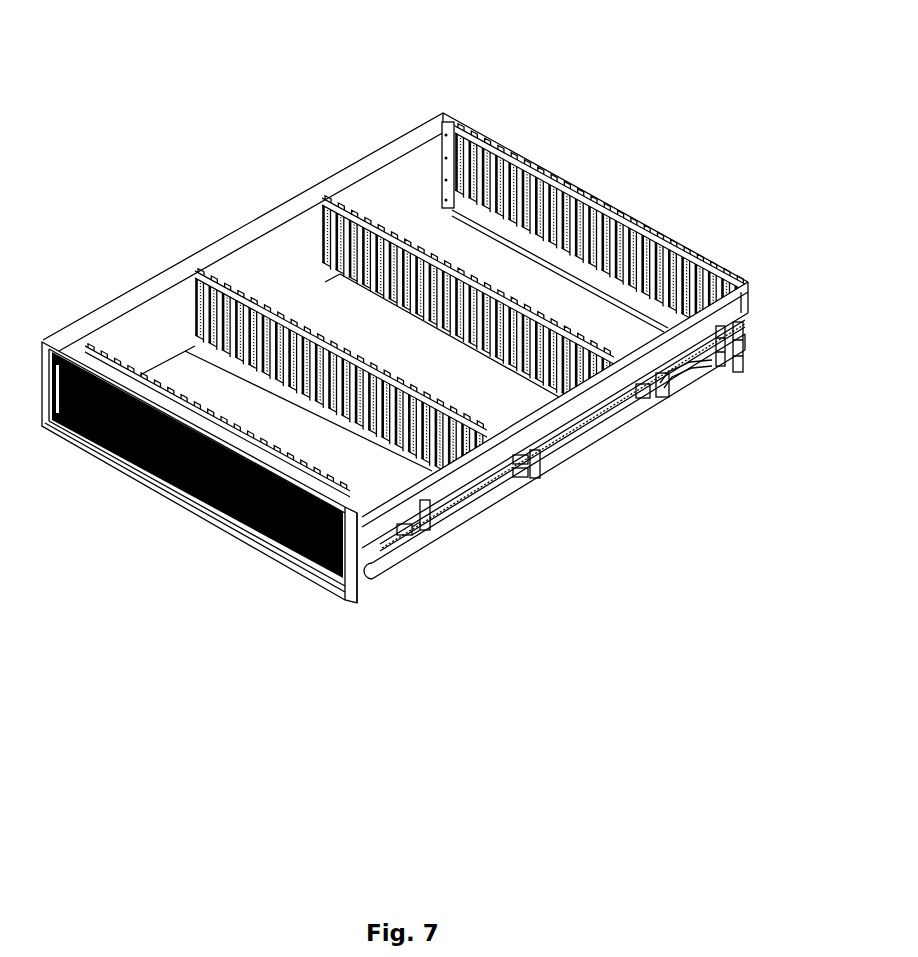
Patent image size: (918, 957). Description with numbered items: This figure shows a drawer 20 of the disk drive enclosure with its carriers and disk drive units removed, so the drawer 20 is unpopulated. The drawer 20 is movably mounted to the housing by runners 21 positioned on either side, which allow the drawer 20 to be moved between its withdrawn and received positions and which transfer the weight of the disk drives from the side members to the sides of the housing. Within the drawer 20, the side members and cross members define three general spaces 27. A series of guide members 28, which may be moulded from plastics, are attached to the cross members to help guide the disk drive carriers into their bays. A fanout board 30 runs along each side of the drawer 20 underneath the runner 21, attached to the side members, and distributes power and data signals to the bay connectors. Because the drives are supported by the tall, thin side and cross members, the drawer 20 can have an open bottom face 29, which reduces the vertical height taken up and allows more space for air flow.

The drawer 20 is at (253, 34).
The runner 21 is at (730, 307).
The general spaces 27 is at (613, 317).
The guide members 28 is at (380, 212).
The open bottom face 29 is at (210, 388).
The fanout board 30 is at (688, 372).